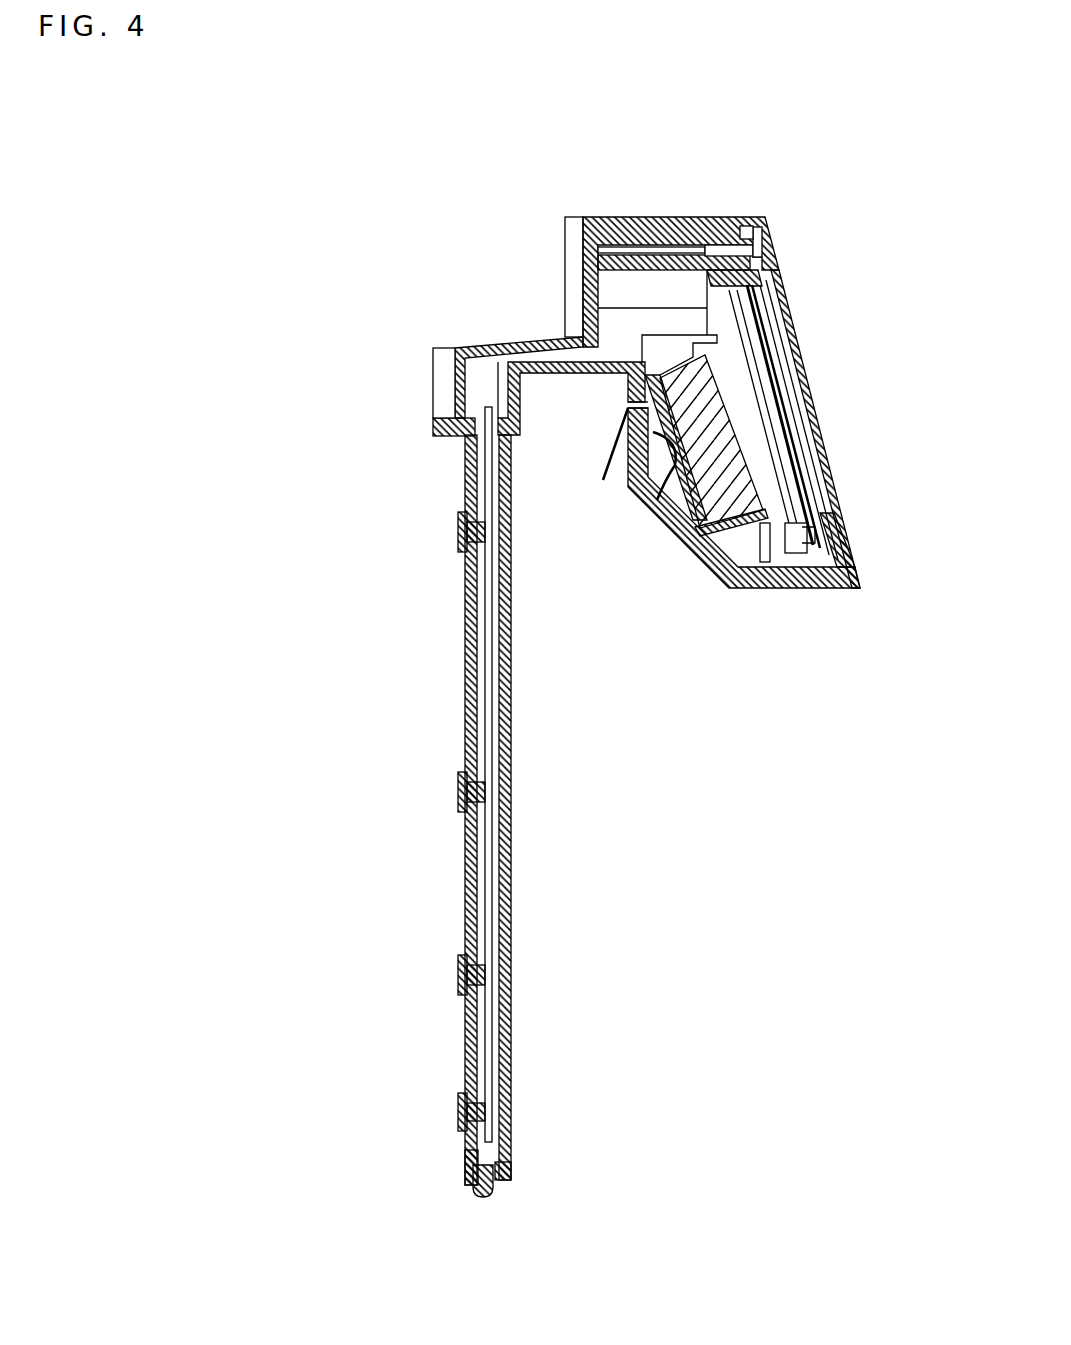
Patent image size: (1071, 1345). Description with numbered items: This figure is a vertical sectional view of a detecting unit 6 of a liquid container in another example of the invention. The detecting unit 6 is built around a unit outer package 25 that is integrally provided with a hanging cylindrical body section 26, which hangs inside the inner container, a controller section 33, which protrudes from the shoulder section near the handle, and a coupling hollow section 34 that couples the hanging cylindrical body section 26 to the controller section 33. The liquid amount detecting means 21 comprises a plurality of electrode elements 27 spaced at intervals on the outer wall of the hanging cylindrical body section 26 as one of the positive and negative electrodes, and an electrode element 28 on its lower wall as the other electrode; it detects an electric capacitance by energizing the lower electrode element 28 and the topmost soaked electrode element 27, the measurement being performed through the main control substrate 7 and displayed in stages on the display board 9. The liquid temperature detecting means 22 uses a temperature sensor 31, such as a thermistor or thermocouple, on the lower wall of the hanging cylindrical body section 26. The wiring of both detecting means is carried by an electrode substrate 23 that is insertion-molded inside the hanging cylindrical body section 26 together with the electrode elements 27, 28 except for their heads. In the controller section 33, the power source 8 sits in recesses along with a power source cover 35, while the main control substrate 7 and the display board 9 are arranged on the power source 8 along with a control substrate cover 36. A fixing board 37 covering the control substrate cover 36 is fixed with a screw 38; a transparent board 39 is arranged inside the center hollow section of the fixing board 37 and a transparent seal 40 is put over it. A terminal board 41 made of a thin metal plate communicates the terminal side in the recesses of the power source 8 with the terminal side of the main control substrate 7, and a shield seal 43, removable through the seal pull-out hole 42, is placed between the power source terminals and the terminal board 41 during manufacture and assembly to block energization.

The detecting unit 6 is at (403, 317).
The main control substrate 7 is at (782, 565).
The power source 8 is at (705, 497).
The display board 9 is at (757, 385).
The liquid amount detecting means 21 is at (412, 493).
The liquid temperature detecting means 22 is at (545, 1255).
The electrode substrate 23 is at (490, 865).
The unit outer package 25 is at (426, 387).
The hanging cylindrical body section 26 is at (511, 666).
The electrode element 27 is at (460, 530).
The electrode element 28 is at (478, 1197).
The temperature sensor 31 is at (505, 1185).
The controller section 33 is at (684, 247).
The coupling hollow section 34 is at (508, 335).
The power source cover 35 is at (722, 580).
The control substrate cover 36 is at (652, 218).
The fixing board 37 is at (853, 588).
The screw 38 is at (722, 248).
The transparent board 39 is at (817, 483).
The transparent seal 40 is at (786, 393).
The terminal board 41 is at (660, 495).
The seal pull-out hole 42 is at (630, 404).
The shield seal 43 is at (597, 477).